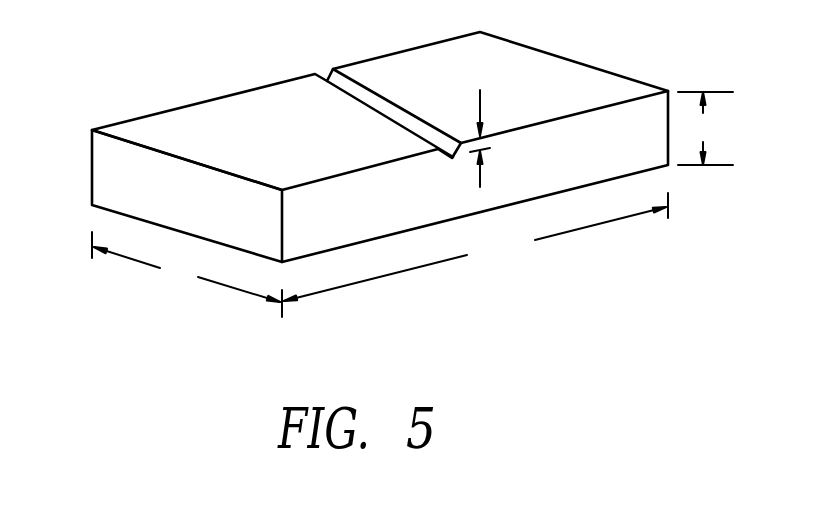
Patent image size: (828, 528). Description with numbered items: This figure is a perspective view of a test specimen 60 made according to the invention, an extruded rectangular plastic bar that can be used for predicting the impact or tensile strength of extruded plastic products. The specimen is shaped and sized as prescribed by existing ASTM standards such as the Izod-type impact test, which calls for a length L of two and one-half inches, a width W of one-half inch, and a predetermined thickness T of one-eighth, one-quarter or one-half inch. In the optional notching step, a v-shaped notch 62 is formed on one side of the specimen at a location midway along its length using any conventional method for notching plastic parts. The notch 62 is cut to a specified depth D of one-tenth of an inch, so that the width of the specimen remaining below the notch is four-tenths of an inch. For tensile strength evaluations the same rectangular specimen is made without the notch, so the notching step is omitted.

The test specimen 60 is at (145, 112).
The v-shaped notch 62 is at (359, 99).
The thickness T is at (705, 128).
The length L is at (475, 255).
The width W is at (186, 267).
The depth D is at (481, 181).